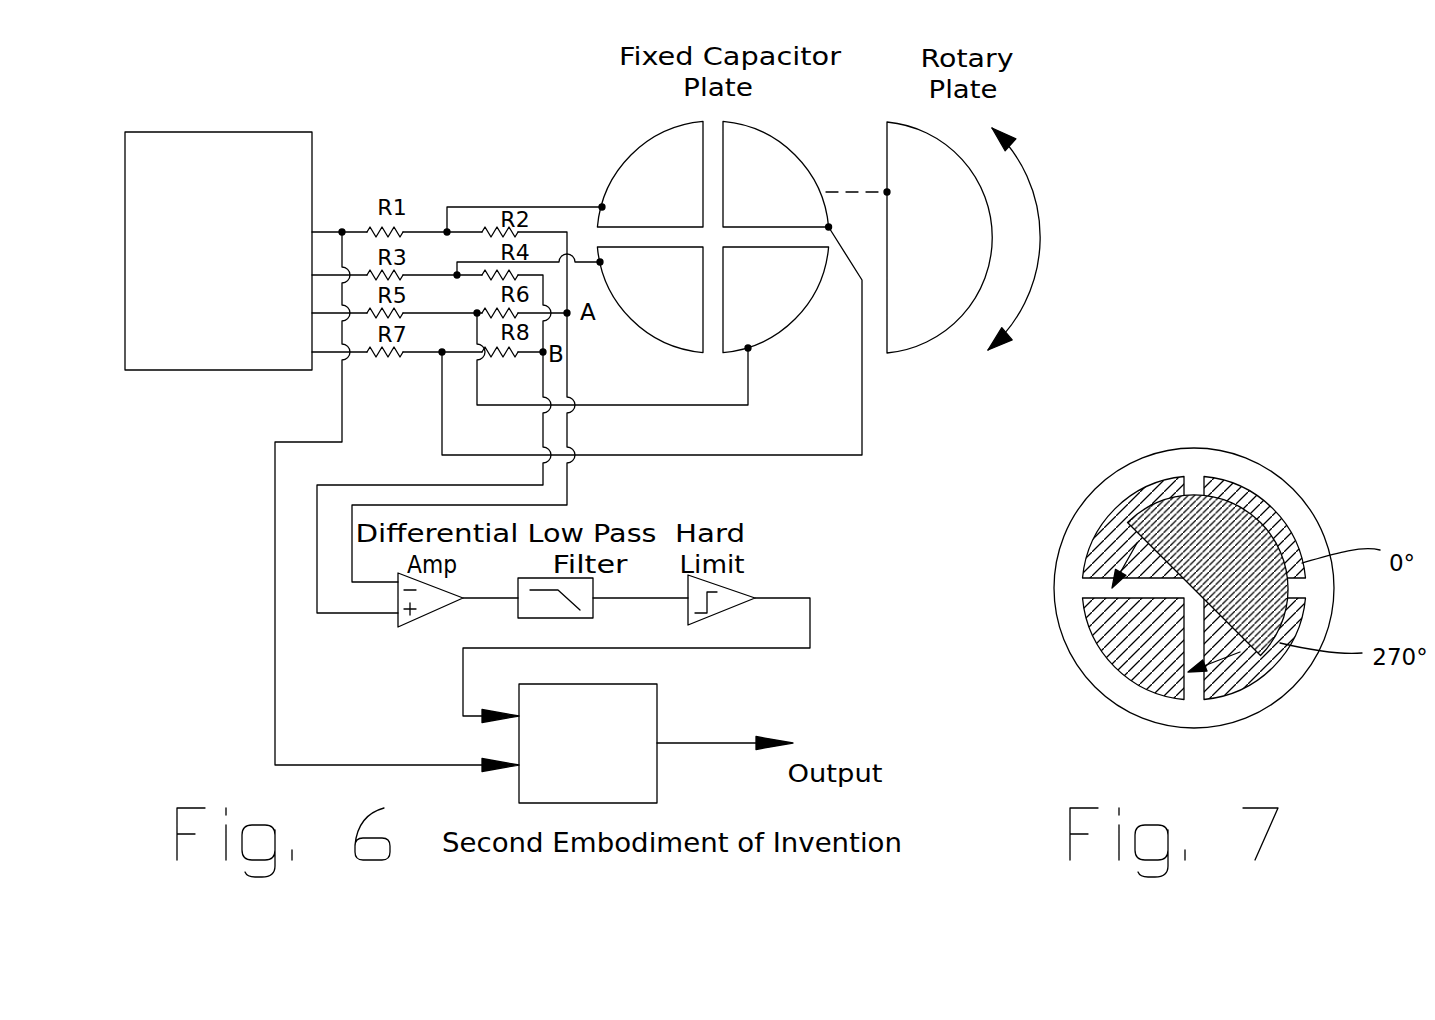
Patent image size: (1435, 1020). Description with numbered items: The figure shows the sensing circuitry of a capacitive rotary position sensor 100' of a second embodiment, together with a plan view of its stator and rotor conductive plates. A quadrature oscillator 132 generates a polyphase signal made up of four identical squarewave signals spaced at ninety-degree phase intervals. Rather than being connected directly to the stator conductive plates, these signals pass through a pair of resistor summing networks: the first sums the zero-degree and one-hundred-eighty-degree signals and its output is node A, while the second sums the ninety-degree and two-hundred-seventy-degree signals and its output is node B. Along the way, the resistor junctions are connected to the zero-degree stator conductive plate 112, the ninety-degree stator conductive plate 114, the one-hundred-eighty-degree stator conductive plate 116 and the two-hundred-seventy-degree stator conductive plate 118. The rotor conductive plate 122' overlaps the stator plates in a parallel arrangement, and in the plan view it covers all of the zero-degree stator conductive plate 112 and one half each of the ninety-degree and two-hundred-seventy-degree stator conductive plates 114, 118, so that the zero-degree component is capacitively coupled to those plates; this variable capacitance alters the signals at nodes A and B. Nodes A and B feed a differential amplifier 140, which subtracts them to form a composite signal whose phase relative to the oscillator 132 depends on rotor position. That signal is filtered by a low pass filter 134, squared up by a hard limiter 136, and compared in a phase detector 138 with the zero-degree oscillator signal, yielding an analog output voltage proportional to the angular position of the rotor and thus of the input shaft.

In FIG. 6, the rotary position sensor 100' is at (568, 386).
In FIG. 6, the quadrature oscillator 132 is at (215, 132).
In FIG. 6, the 0° stator conductive plate 112 is at (627, 158).
In FIG. 7, the 0° stator conductive plate 112 is at (1258, 490).
In FIG. 6, the 90° stator conductive plate 114 is at (657, 338).
In FIG. 7, the 90° stator conductive plate 114 is at (1137, 490).
In FIG. 6, the 180° stator conductive plate 116 is at (788, 328).
In FIG. 7, the 180° stator conductive plate 116 is at (1080, 618).
In FIG. 6, the 270° stator conductive plate 118 is at (795, 152).
In FIG. 7, the 270° stator conductive plate 118 is at (1267, 675).
In FIG. 6, the rotor conductive plate 122' is at (933, 266).
In FIG. 7, the rotor conductive plate 122' is at (1261, 568).
In FIG. 6, the differential amplifier 140 is at (403, 620).
In FIG. 6, the low pass filter 134 is at (518, 612).
In FIG. 6, the hard limiter 136 is at (688, 620).
In FIG. 6, the phase detector 138 is at (657, 727).